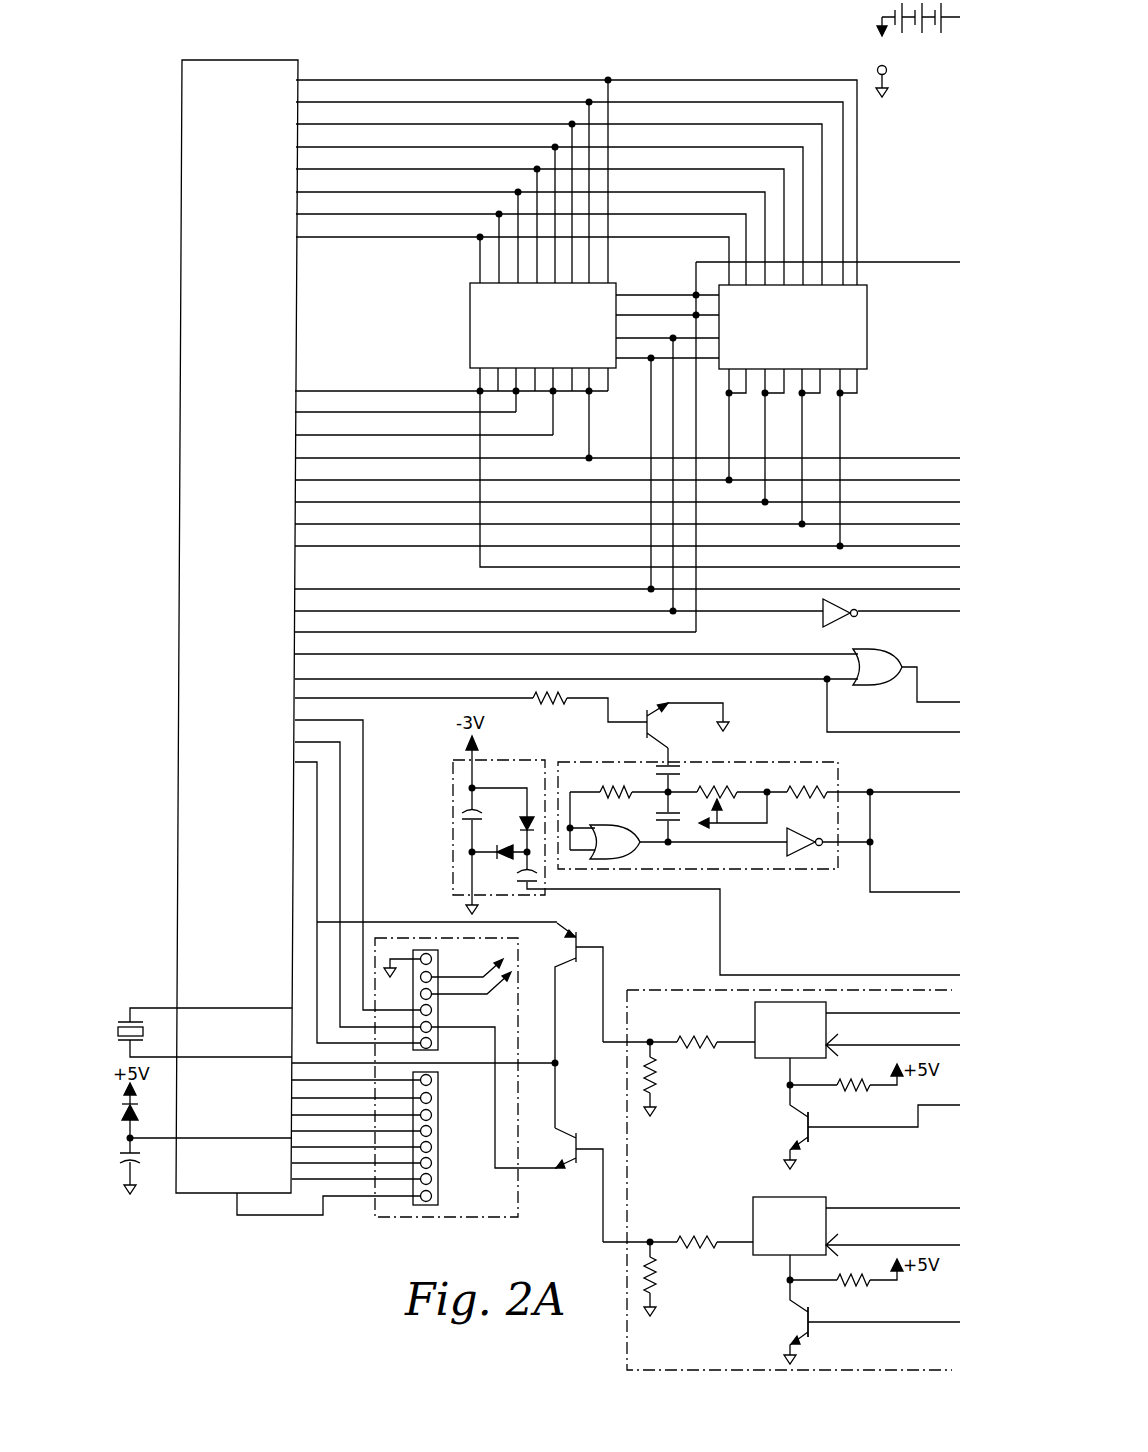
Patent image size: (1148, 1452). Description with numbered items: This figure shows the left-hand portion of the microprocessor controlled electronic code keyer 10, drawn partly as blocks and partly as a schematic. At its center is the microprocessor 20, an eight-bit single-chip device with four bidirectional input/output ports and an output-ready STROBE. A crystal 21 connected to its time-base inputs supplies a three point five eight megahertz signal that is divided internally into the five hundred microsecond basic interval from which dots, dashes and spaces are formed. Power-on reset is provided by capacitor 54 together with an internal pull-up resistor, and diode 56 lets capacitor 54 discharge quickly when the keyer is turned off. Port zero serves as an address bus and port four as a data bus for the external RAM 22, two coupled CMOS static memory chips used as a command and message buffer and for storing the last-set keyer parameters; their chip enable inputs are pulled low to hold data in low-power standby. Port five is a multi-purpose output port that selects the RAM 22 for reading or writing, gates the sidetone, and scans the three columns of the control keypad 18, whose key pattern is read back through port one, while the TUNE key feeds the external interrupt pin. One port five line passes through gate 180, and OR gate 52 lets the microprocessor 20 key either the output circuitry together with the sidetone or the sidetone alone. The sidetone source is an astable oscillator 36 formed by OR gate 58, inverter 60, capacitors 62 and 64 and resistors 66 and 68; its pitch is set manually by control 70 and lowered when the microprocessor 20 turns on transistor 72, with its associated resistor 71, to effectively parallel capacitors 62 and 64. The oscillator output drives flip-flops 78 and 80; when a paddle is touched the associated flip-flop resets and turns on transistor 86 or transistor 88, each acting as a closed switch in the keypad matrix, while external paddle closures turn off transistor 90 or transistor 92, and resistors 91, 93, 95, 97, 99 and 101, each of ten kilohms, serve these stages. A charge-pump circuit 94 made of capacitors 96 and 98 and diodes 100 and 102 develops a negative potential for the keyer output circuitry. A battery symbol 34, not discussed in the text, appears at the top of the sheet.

The electronic code keyer 10 is at (446, 67).
The control keypad 18 is at (508, 1207).
The microprocessor 20 is at (246, 810).
The crystal 21 is at (124, 1020).
The external RAM 22 is at (557, 338).
The battery 34 is at (915, 35).
The astable oscillator 36 is at (726, 867).
The OR gate 52 is at (885, 678).
The capacitor 54 is at (120, 1158).
The diode 56 is at (121, 1118).
The OR gate 58 is at (615, 842).
The inverter 60 is at (797, 830).
The capacitor 62 is at (653, 768).
The capacitor 64 is at (656, 817).
The resistor 66 is at (612, 788).
The resistor 68 is at (814, 789).
The control 70 is at (722, 796).
The resistor 71 is at (550, 703).
The transistor 72 is at (649, 727).
The flip-flop 78 is at (802, 1037).
The flip-flop 80 is at (802, 1237).
The transistor 86 is at (572, 947).
The transistor 88 is at (572, 1149).
The transistor 90 is at (797, 1128).
The resistor 91 is at (861, 1288).
The transistor 92 is at (797, 1323).
The resistor 93 is at (707, 1237).
The charge-pump circuit 94 is at (540, 782).
The resistor 95 is at (656, 1279).
The capacitor 96 is at (463, 816).
The resistor 97 is at (656, 1070).
The capacitor 98 is at (539, 883).
The resistor 99 is at (684, 1038).
The diode 100 is at (511, 858).
The resistor 101 is at (847, 1093).
The diode 102 is at (521, 821).
The logic gate 180 is at (823, 621).